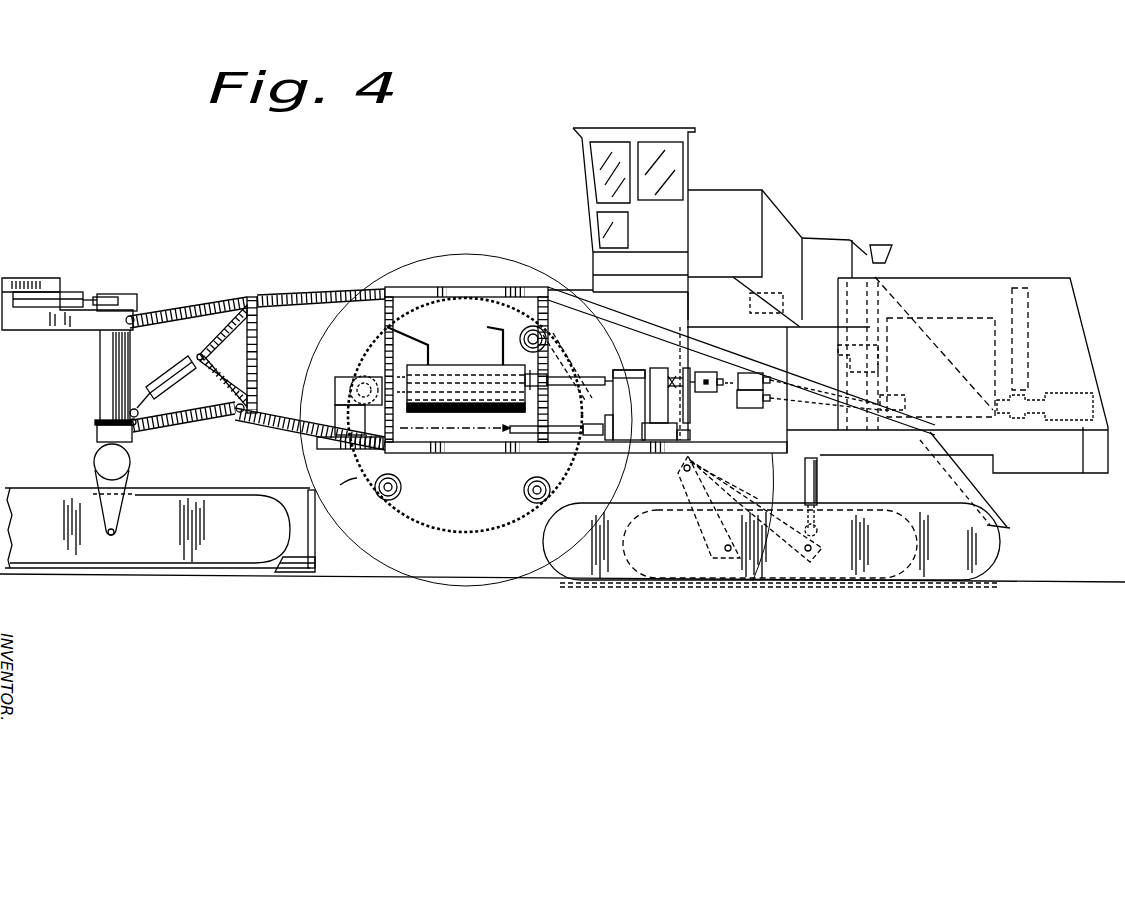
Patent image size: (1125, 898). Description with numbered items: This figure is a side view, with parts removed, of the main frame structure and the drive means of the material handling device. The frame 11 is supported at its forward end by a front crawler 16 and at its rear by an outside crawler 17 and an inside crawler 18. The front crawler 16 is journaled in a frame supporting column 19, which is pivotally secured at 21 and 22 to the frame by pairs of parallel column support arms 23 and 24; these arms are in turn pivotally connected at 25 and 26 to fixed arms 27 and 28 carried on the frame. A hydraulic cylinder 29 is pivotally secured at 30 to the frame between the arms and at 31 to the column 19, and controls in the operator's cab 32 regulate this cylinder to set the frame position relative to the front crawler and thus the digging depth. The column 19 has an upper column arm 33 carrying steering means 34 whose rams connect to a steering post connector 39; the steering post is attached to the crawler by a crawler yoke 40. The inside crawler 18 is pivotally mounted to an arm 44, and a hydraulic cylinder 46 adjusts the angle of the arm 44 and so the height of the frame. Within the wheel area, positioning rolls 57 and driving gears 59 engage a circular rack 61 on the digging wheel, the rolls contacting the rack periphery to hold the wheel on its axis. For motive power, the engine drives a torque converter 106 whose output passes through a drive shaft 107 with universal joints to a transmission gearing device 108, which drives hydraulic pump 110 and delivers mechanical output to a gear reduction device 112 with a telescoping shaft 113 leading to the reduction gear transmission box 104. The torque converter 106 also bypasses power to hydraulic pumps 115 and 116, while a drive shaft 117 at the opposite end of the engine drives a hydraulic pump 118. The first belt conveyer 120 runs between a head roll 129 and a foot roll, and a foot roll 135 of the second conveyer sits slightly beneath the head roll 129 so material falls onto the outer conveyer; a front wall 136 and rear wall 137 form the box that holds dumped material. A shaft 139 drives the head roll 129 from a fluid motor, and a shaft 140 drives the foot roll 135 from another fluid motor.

The frame 11 is at (272, 290).
The front transporting and propelling means 16 is at (142, 550).
The rear transporting and propelling means 17 is at (623, 568).
The rear transporting and propelling means 18 is at (958, 563).
The frame supporting column 19 is at (102, 396).
The pivot 21 is at (134, 318).
The pivot 22 is at (136, 425).
The column support arm 23 is at (183, 310).
The column support arm 24 is at (185, 420).
The pivot 25 is at (250, 297).
The pivot 26 is at (236, 414).
The fixed arm 27 is at (325, 296).
The fixed arm 28 is at (280, 420).
The hydraulic cylinder 29 is at (170, 378).
The pivot 30 is at (199, 352).
The pivot 31 is at (135, 408).
The operator's cab 32 is at (692, 175).
The upper column arm 33 is at (66, 326).
The steering means 34 is at (68, 300).
The steering post connector 39 is at (120, 298).
The crawler yoke 40 is at (95, 460).
The arm 44 is at (773, 458).
The hydraulic cylinder 46 is at (817, 478).
The positioning roll 57 is at (401, 484).
The driving gear 59 is at (358, 374).
The circular rack 61 is at (348, 484).
The reduction gear transmission box 104 is at (340, 402).
The torque converter 106 is at (845, 418).
The drive shaft 107 is at (715, 395).
The transmission gearing device 108 is at (688, 410).
The hydraulic pump 110 is at (705, 372).
The gear reduction device 112 is at (640, 372).
The telescoping shaft 113 is at (546, 435).
The hydraulic pump 115 is at (748, 405).
The hydraulic pump 116 is at (753, 373).
The drive shaft 117 is at (1003, 385).
The hydraulic pump 118 is at (1072, 395).
The first belt conveyer 120 is at (470, 355).
The head roll 129 is at (520, 368).
The foot roll 135 is at (472, 411).
The front wall 136 is at (425, 342).
The rear wall 137 is at (490, 327).
The shaft 139 is at (590, 390).
The shaft 140 is at (576, 365).